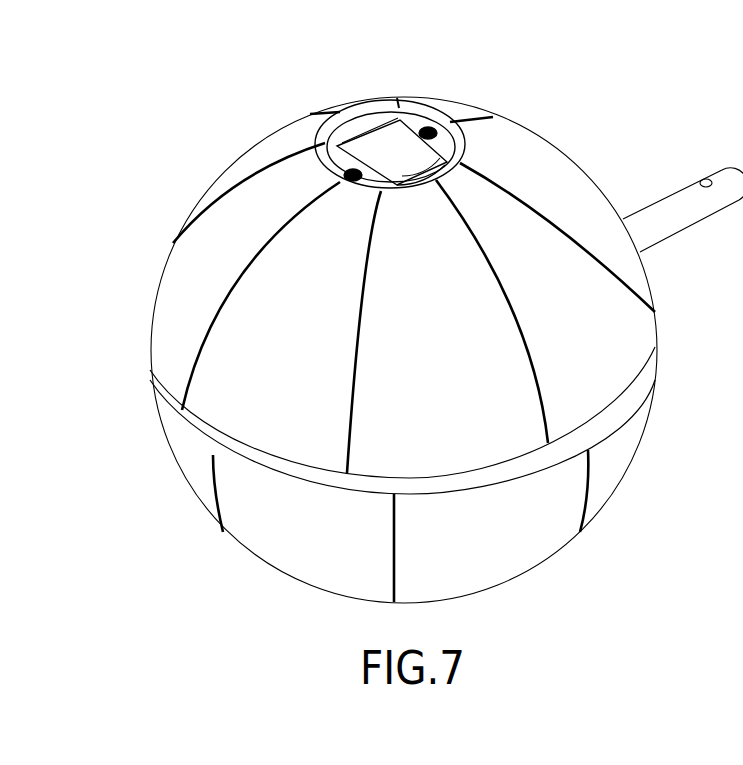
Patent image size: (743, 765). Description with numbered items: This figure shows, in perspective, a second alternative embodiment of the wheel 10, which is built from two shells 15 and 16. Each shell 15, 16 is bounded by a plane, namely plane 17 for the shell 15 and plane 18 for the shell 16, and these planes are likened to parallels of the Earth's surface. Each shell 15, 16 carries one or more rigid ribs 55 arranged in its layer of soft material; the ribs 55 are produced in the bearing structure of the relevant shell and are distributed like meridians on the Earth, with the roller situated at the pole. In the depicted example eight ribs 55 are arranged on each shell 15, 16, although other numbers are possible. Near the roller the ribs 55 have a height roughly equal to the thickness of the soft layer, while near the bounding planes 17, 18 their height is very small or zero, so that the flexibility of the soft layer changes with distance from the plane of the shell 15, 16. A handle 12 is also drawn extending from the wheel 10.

The wheel 10 is at (236, 113).
The handle 12 is at (666, 205).
The shell 15 is at (540, 137).
The shell 16 is at (593, 574).
The plane 17 is at (623, 387).
The plane 18 is at (620, 432).
The rigid ribs 55 is at (297, 210).